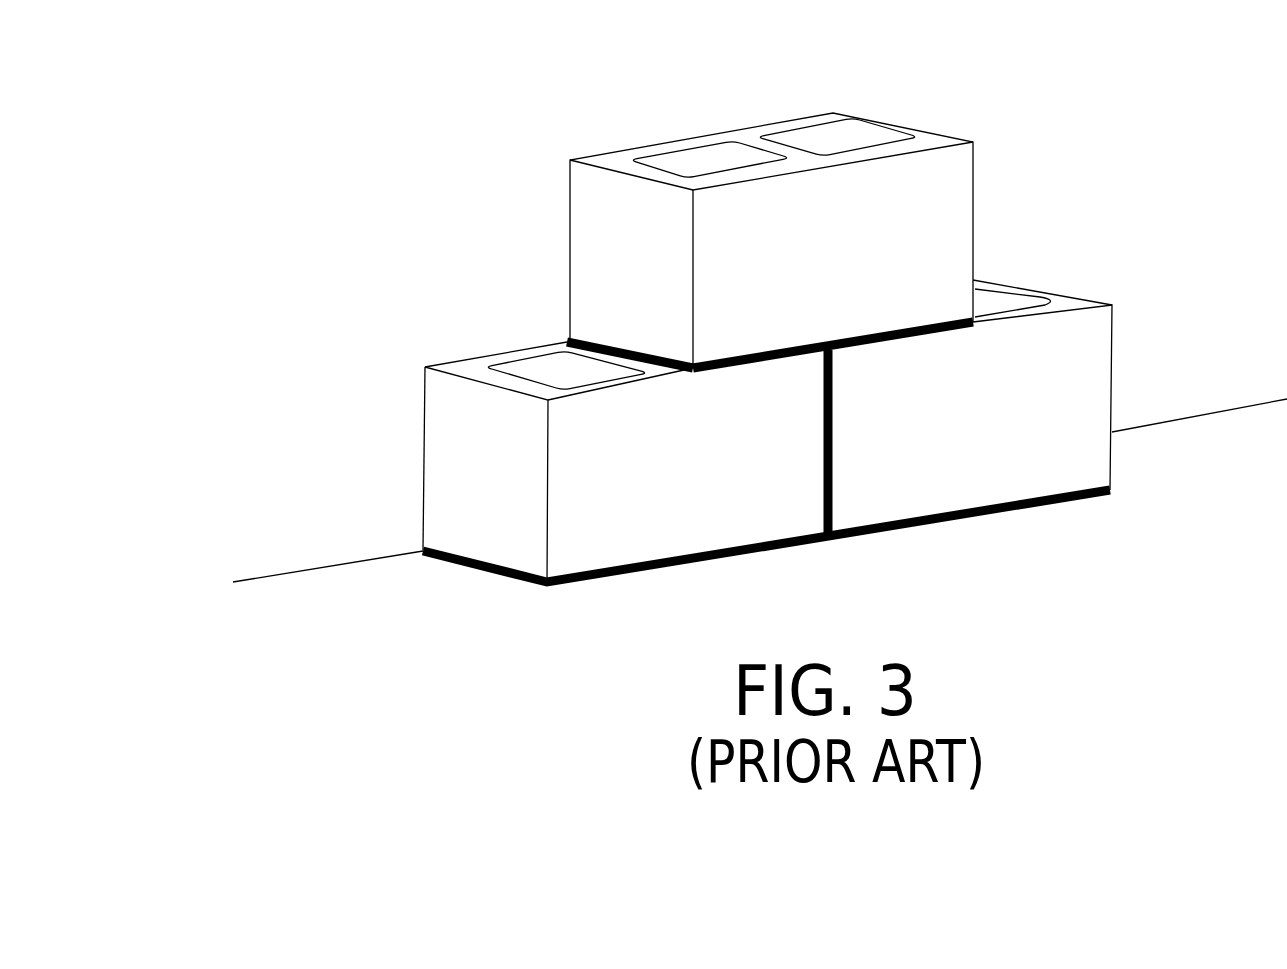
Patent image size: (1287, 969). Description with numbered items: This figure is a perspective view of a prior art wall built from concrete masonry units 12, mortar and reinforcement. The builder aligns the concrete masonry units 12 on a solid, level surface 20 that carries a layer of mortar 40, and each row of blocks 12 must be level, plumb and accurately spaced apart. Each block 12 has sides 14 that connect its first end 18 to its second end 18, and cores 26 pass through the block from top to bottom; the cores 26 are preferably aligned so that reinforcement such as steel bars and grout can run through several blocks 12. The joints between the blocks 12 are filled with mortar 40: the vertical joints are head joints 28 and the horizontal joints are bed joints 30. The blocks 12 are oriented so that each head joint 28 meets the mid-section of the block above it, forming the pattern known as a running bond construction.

The concrete masonry unit 12 is at (806, 377).
The side 14 is at (672, 474).
The end 18 is at (397, 474).
The solid, level surface 20 is at (326, 544).
The core 26 is at (743, 221).
The head joint 28 is at (990, 472).
The bed joint 30 is at (913, 248).
The mortar 40 is at (758, 438).